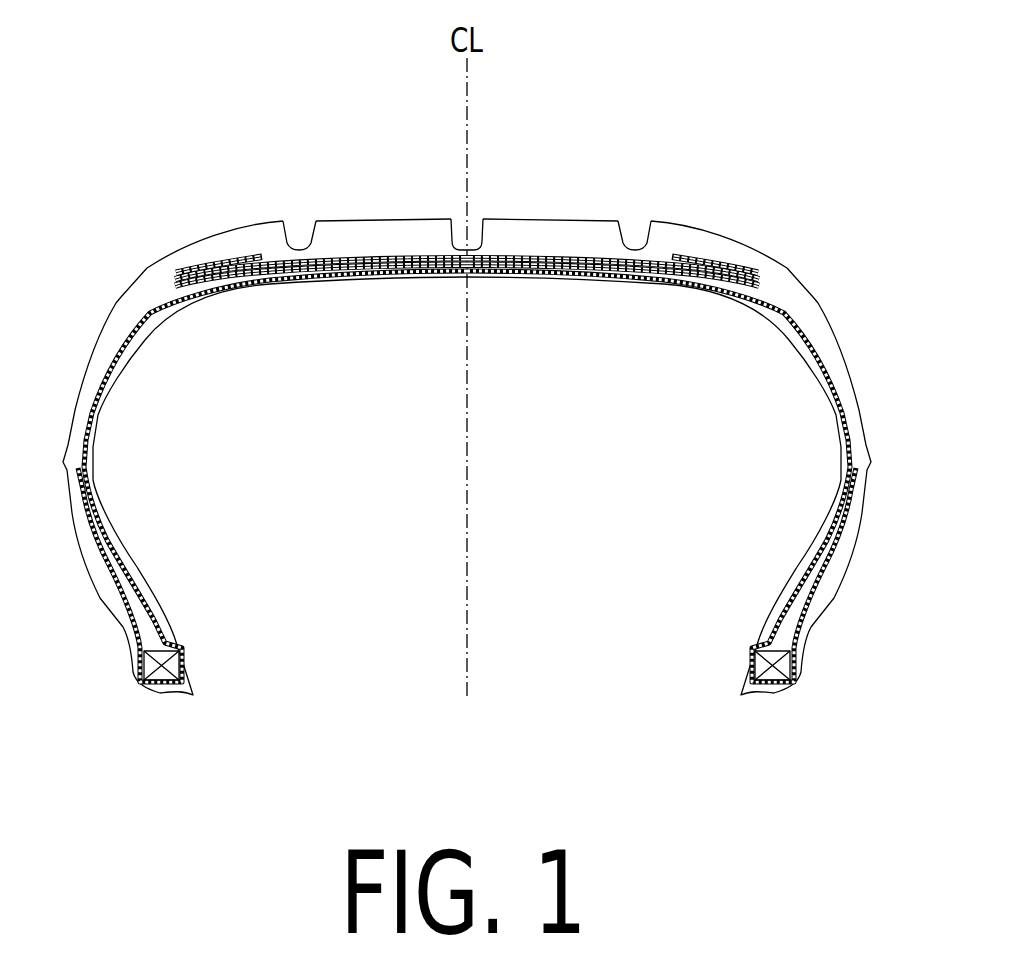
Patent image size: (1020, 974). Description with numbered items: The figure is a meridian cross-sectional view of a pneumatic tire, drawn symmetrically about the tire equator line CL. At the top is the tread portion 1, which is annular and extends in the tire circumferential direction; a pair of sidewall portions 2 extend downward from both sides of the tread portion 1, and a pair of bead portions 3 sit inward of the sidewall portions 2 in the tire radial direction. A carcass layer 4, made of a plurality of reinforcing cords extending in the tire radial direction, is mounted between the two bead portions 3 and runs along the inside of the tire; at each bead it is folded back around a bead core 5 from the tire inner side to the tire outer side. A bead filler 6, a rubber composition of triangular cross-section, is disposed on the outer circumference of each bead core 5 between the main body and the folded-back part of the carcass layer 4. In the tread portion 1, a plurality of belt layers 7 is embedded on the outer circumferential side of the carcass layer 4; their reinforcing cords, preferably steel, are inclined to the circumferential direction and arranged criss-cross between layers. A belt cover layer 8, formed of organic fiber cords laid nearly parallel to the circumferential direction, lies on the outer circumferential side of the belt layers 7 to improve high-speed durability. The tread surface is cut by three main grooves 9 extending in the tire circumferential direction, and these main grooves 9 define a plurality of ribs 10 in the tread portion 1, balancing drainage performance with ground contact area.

The tread portion 1 is at (495, 165).
The sidewall portions 2 is at (61, 388).
The bead portions 3 is at (117, 658).
The carcass layer 4 is at (128, 342).
The bead core 5 is at (170, 663).
The bead filler 6 is at (153, 627).
The belt layers 7 is at (635, 277).
The belt cover layer 8 is at (232, 263).
The main grooves 9 is at (307, 221).
The ribs 10 is at (270, 221).